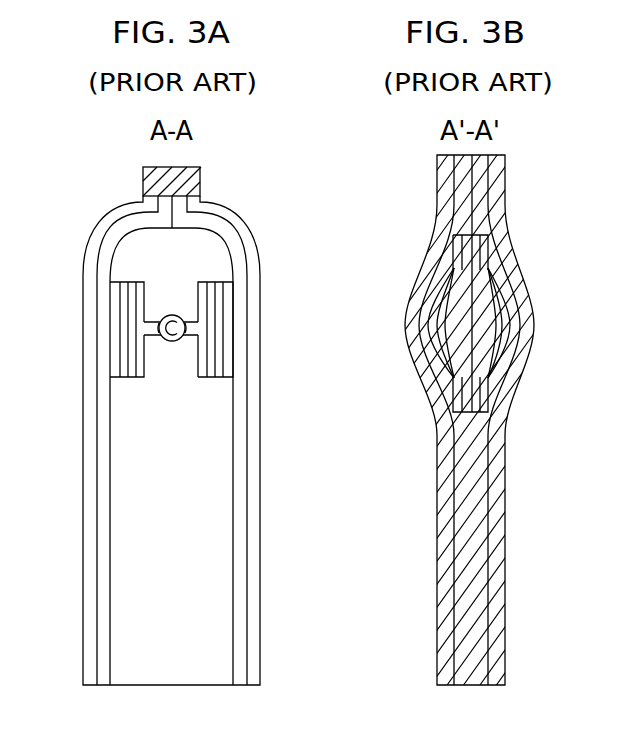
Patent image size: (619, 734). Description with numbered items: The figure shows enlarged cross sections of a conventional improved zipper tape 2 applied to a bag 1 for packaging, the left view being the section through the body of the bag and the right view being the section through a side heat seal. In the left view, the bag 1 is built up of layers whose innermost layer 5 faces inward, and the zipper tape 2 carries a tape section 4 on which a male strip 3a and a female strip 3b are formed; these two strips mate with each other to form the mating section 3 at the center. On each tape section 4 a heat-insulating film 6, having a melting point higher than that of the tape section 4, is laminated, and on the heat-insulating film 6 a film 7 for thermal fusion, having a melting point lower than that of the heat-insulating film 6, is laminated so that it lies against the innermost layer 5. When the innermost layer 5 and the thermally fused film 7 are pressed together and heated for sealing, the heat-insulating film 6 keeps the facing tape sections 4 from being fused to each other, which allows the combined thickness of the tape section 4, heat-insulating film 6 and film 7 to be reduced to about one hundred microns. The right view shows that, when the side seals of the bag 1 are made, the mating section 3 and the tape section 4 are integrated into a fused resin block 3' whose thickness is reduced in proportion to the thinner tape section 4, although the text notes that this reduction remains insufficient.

In FIG. 3A, the bag for packaging 1 is at (130, 588).
In FIG. 3B, the bag for packaging 1 is at (490, 632).
In FIG. 3A, the zipper tape 2 is at (170, 370).
In FIG. 3A, the mating section 3 is at (221, 262).
In FIG. 3A, the male strip 3a is at (163, 323).
In FIG. 3A, the female strip 3b is at (176, 317).
In FIG. 3B, the fused resin block 3' is at (526, 323).
In FIG. 3A, the tape section 4 is at (140, 348).
In FIG. 3B, the tape section 4 is at (480, 247).
In FIG. 3A, the innermost layer 5 is at (105, 506).
In FIG. 3B, the innermost layer 5 is at (455, 540).
In FIG. 3A, the heat-insulating film 6 is at (127, 355).
In FIG. 3B, the heat-insulating film 6 is at (450, 329).
In FIG. 3A, the film for thermal fusion 7 is at (115, 372).
In FIG. 3B, the film for thermal fusion 7 is at (453, 357).